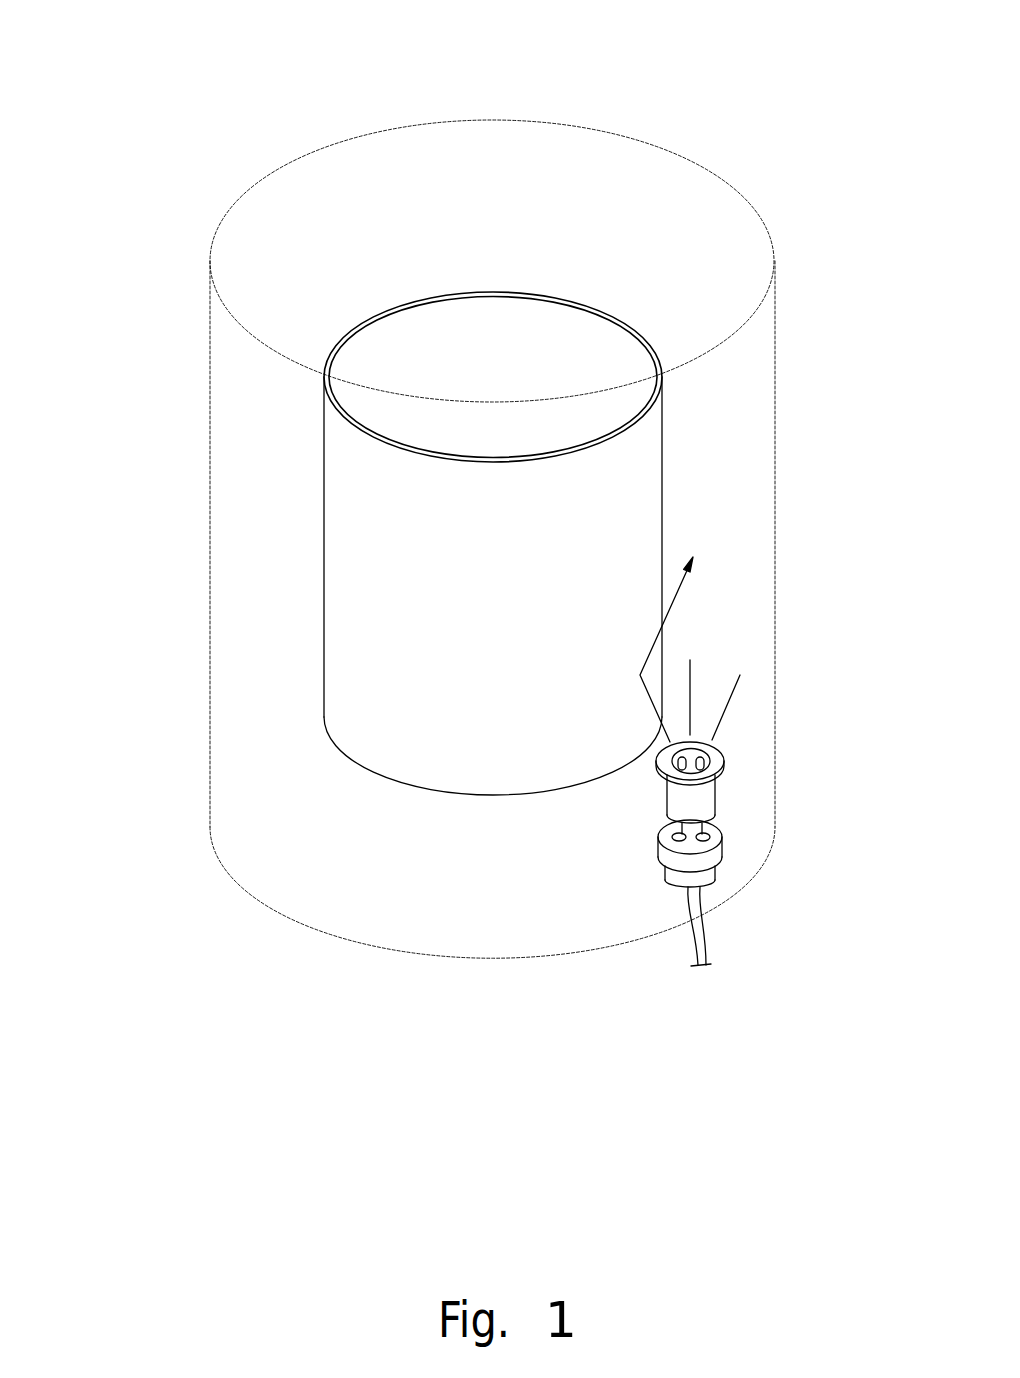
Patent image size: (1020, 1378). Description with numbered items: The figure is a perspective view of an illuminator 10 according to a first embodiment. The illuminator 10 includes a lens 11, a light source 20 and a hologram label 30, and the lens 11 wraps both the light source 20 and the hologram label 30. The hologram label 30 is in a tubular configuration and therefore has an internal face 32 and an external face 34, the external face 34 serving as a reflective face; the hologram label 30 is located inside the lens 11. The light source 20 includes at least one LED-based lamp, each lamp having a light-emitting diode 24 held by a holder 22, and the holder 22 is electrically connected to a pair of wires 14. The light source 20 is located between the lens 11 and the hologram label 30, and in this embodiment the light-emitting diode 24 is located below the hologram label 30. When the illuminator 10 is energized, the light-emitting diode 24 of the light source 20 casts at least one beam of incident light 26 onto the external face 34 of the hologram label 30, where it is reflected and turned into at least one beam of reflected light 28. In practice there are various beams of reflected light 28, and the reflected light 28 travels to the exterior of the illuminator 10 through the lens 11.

The illuminator 10 is at (298, 131).
The lens 11 is at (212, 545).
The wires 14 is at (707, 950).
The light source 20 is at (818, 707).
The holder 22 is at (706, 803).
The light-emitting diode 24 is at (704, 762).
The incident light 26 is at (653, 703).
The reflected light 28 is at (672, 608).
The hologram label 30 is at (825, 270).
The internal face 32 is at (627, 366).
The external face 34 is at (637, 476).